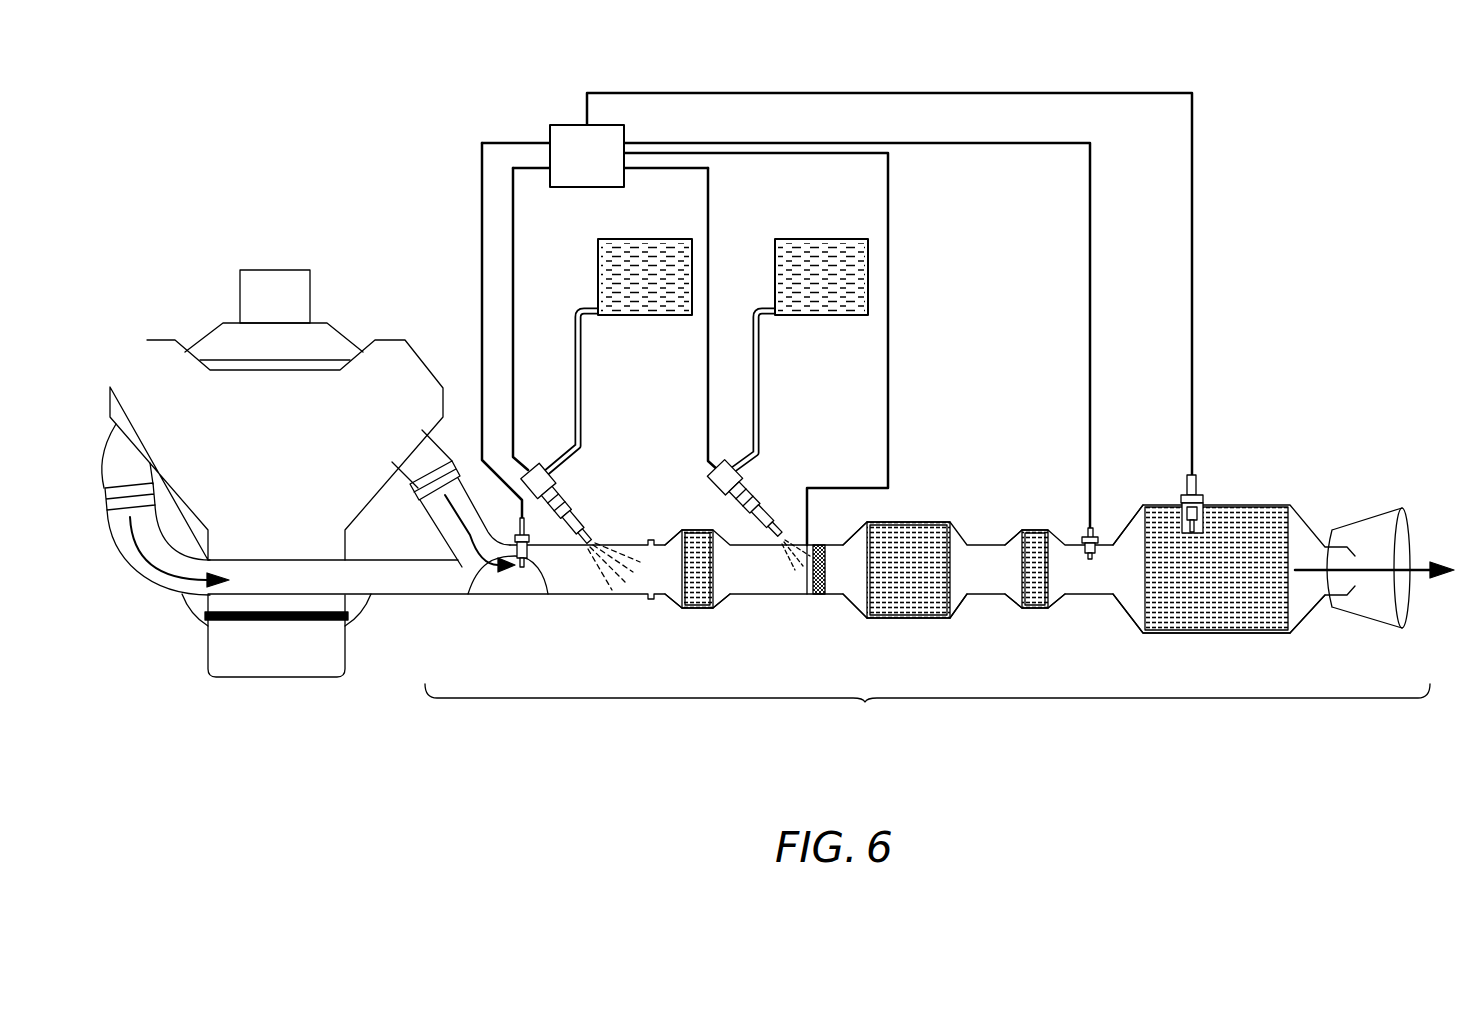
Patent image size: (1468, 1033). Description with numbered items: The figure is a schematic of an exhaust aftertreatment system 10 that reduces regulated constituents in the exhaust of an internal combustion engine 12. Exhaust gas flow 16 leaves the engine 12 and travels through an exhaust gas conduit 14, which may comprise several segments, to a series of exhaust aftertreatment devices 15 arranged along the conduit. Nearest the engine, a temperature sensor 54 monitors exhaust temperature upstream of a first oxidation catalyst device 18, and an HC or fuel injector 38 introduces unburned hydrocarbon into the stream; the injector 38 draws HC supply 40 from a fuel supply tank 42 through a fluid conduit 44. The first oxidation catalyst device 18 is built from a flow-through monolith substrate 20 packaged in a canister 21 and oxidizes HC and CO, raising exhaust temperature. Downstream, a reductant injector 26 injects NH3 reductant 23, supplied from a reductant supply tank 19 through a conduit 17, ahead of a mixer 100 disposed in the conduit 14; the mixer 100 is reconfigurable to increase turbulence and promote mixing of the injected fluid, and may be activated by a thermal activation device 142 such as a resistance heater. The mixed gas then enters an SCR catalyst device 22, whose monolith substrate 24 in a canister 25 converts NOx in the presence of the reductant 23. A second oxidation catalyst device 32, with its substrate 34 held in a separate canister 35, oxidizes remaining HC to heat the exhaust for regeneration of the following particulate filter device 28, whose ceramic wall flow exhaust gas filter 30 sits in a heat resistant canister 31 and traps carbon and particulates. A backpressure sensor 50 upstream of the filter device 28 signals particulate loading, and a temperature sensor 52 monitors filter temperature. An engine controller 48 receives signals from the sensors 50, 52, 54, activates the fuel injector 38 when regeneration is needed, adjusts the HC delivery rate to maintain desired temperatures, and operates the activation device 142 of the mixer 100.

The exhaust aftertreatment system 10 is at (863, 702).
The internal combustion engine 12 is at (194, 323).
The exhaust gas conduit 14 is at (417, 598).
The exhaust aftertreatment device 15 is at (690, 611).
The exhaust gas flow 16 is at (156, 586).
The conduit 17 is at (762, 396).
The first oxidation catalyst device 18 is at (679, 612).
The reductant supply tank 19 is at (818, 234).
The monolith substrate 20 is at (700, 530).
The canister 21 is at (703, 609).
The SCR catalyst device 22 is at (877, 624).
The reductant 23 is at (821, 277).
The monolith substrate 24 is at (922, 541).
The canister 25 is at (908, 619).
The reductant injector 26 is at (762, 506).
The particulate filter device 28 is at (1304, 629).
The exhaust gas filter 30 is at (1254, 619).
The canister 31 is at (1175, 634).
The second oxidation catalyst device 32 is at (1012, 610).
The monolith substrate 34 is at (1036, 545).
The canister 35 is at (1036, 609).
The fuel injector 38 is at (571, 501).
The HC supply 40 is at (614, 553).
The fuel supply tank 42 is at (641, 234).
The fluid conduit 44 is at (582, 414).
The engine controller 48 is at (837, 319).
The backpressure sensor 50 is at (1097, 535).
The temperature sensor 52 is at (1197, 488).
The temperature sensor 54 is at (523, 563).
The mixer 100 is at (832, 581).
The thermal activation device 142 is at (805, 573).